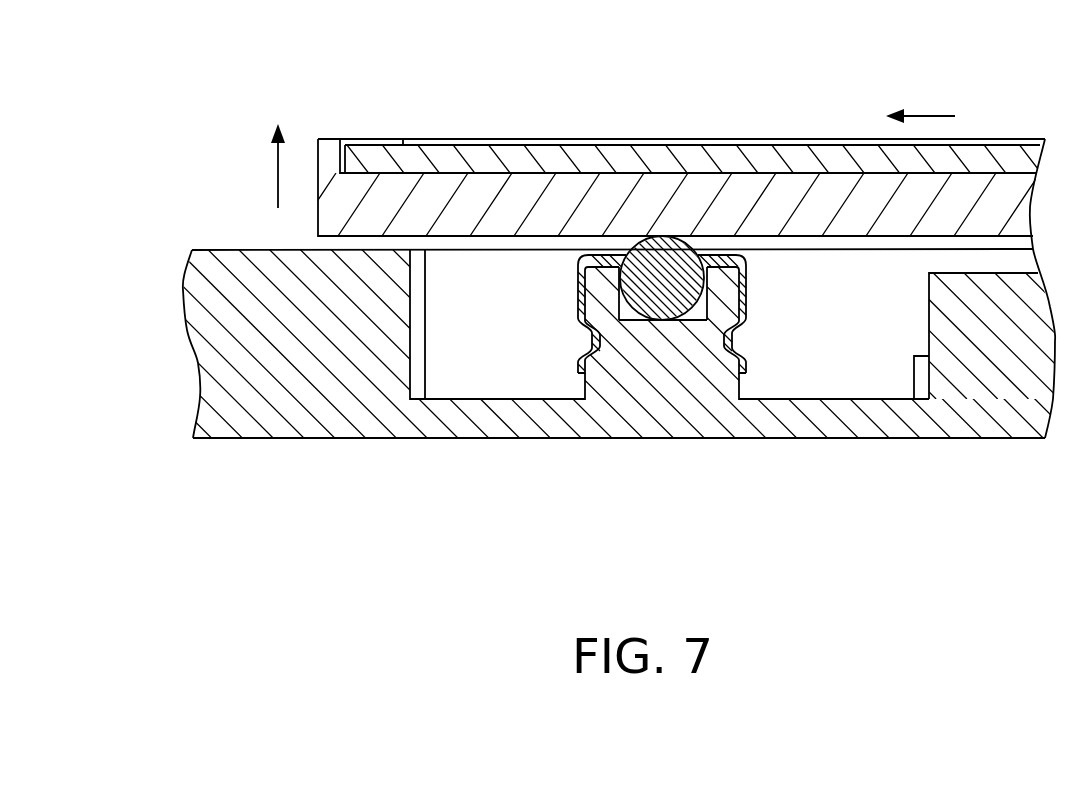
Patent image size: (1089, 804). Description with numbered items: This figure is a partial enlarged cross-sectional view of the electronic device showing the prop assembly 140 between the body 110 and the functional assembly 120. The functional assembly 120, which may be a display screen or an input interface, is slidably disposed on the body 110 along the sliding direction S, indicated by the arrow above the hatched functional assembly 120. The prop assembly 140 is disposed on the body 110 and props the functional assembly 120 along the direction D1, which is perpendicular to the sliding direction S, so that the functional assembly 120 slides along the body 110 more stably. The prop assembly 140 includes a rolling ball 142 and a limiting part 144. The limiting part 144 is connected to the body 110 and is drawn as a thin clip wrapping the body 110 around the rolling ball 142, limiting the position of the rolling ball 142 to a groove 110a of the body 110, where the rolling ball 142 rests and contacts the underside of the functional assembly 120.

The body 110 is at (348, 405).
The groove 110a is at (688, 325).
The functional assembly 120 is at (523, 188).
The prop assembly 140 is at (594, 313).
The rolling ball 142 is at (578, 268).
The limiting part 144 is at (578, 302).
The direction D1 is at (278, 172).
The sliding direction S is at (925, 116).